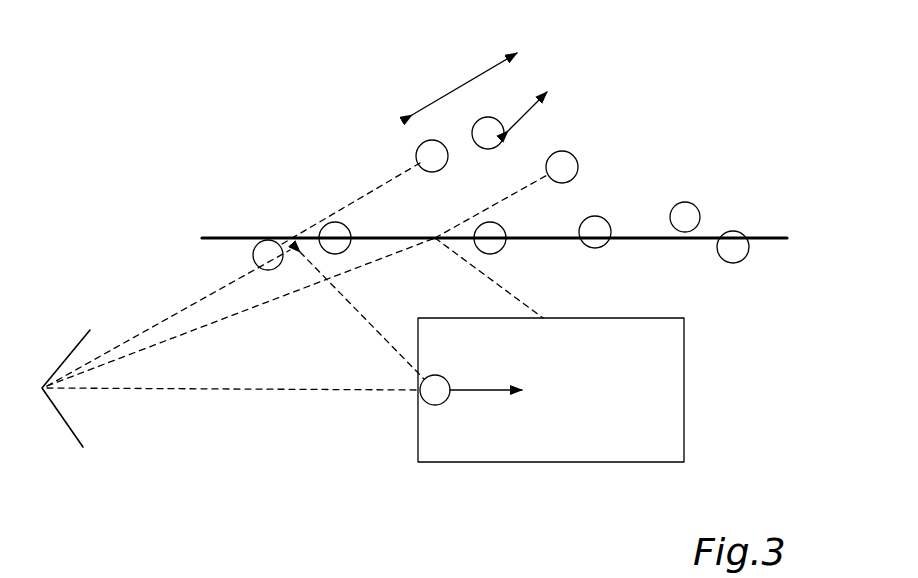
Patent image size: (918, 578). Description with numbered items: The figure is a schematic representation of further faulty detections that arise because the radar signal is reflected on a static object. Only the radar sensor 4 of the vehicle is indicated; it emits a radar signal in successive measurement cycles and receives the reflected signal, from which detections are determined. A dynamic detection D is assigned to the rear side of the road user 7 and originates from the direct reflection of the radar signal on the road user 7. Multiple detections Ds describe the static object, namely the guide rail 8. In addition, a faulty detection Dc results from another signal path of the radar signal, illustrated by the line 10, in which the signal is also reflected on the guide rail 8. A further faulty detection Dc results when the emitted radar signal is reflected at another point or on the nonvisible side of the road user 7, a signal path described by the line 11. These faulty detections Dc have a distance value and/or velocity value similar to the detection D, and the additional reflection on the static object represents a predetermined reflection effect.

The radar sensor 4 is at (60, 370).
The line 10 is at (213, 390).
The line 11 is at (518, 300).
The road user 7 is at (455, 467).
The dynamic detection D is at (430, 392).
The guide rail 8 is at (765, 238).
The faulty detection Dc is at (514, 127).
The static detection Ds is at (687, 212).